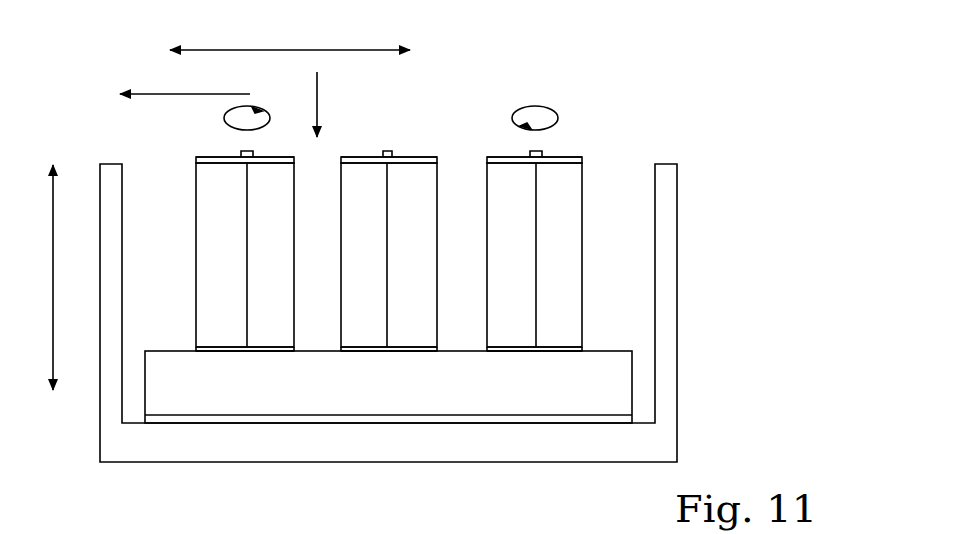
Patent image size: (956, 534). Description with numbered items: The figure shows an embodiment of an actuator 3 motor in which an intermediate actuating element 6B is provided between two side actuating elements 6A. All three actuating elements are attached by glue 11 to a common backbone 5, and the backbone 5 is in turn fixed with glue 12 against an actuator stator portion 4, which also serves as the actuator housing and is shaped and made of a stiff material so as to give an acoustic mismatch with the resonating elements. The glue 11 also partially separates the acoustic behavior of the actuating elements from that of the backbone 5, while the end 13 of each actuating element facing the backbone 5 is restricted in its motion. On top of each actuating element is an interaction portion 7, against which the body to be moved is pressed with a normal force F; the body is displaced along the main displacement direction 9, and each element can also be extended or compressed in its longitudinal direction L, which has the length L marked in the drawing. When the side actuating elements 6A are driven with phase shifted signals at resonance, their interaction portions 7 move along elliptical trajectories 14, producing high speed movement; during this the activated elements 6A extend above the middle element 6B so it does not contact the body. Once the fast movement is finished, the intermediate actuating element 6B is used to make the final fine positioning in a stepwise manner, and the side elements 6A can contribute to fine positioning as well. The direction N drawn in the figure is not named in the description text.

The actuator 3 is at (628, 100).
The actuator stator portion 4 is at (143, 462).
The backbone 5 is at (255, 394).
The side actuating element 6A is at (235, 258).
The intermediate actuating element 6B is at (408, 283).
The interaction portion 7 is at (197, 160).
The main displacement direction 9 is at (290, 36).
The glue 11 is at (196, 349).
The glue 12 is at (342, 418).
The end of actuating element 13 is at (276, 351).
The elliptical trajectory 14 is at (225, 122).
The normal force F is at (185, 79).
The normal direction N is at (330, 104).
The longitudinal direction L is at (64, 277).